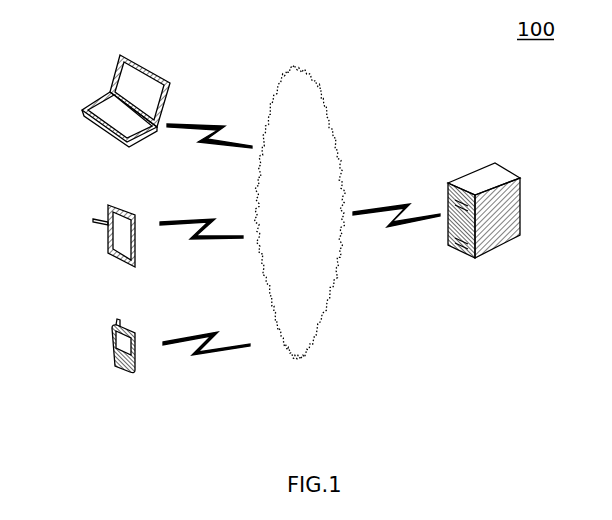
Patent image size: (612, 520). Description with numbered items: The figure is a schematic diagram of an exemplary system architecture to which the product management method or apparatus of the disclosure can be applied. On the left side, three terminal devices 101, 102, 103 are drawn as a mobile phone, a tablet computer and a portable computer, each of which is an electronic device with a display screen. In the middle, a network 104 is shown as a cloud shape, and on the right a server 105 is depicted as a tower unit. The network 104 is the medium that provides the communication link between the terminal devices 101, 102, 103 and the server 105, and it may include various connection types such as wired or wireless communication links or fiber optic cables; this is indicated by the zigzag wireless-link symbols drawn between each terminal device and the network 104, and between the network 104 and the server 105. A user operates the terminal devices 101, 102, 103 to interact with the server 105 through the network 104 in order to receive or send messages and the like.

The terminal device 101 is at (112, 360).
The terminal device 102 is at (107, 238).
The terminal device 103 is at (80, 113).
The network 104 is at (300, 212).
The server 105 is at (523, 200).